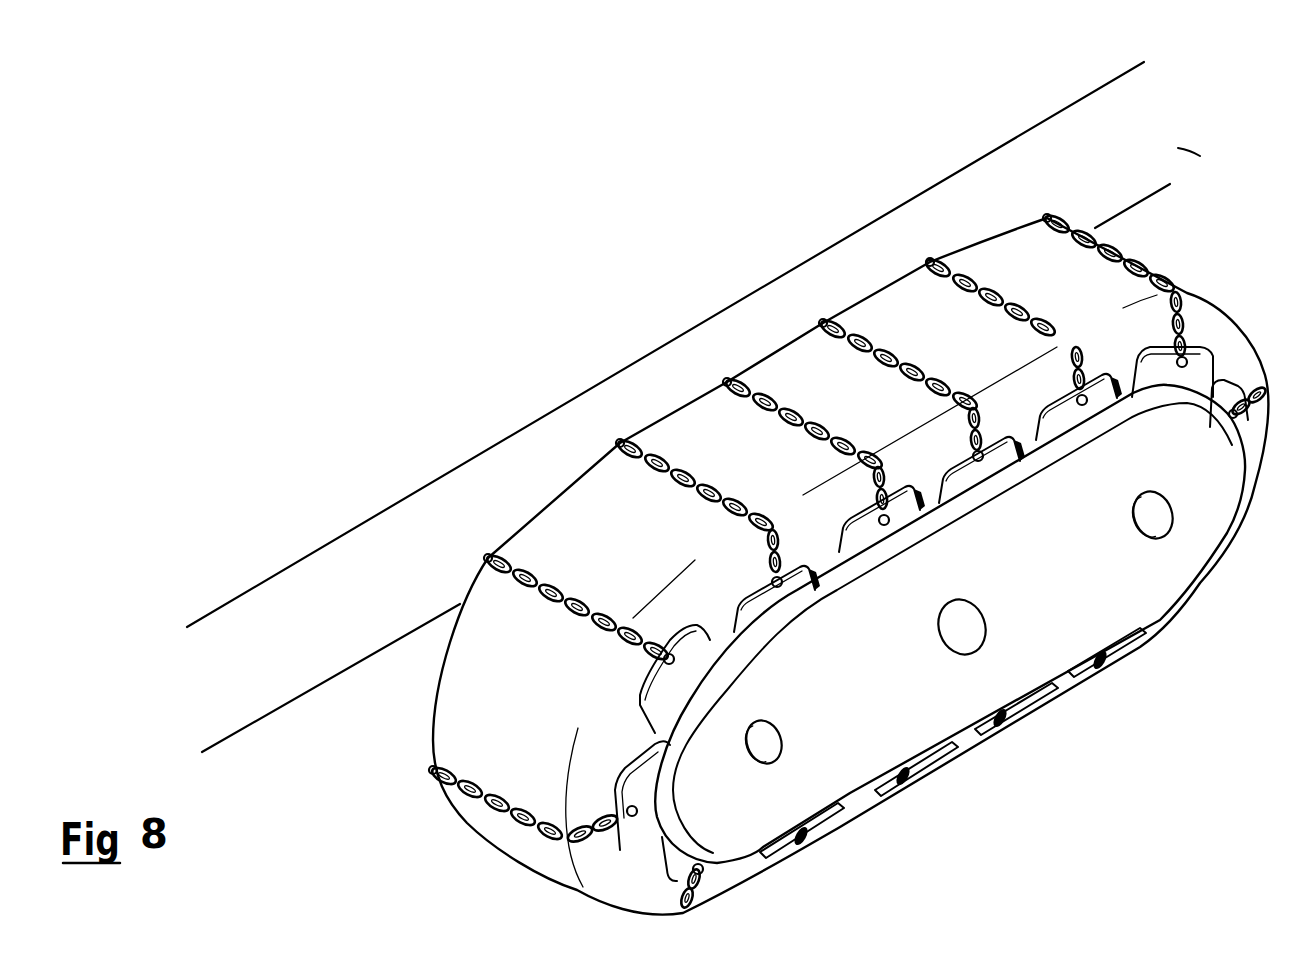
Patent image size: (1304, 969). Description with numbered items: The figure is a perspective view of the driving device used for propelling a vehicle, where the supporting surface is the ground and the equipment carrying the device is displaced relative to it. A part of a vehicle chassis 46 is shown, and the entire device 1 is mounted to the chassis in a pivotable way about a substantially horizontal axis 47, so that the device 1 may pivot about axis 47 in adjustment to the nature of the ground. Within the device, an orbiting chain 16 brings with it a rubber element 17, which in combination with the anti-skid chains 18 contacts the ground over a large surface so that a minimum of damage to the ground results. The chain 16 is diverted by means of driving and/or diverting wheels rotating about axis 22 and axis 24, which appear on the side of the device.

The driving device 1 is at (853, 563).
The orbiting chain 16 is at (857, 537).
The rubber element 17 is at (700, 432).
The anti-skid chains 18 is at (803, 421).
The axis 22 is at (1138, 516).
The axis 24 is at (786, 745).
The vehicle chassis 46 is at (365, 628).
The horizontal axis 47 is at (968, 618).